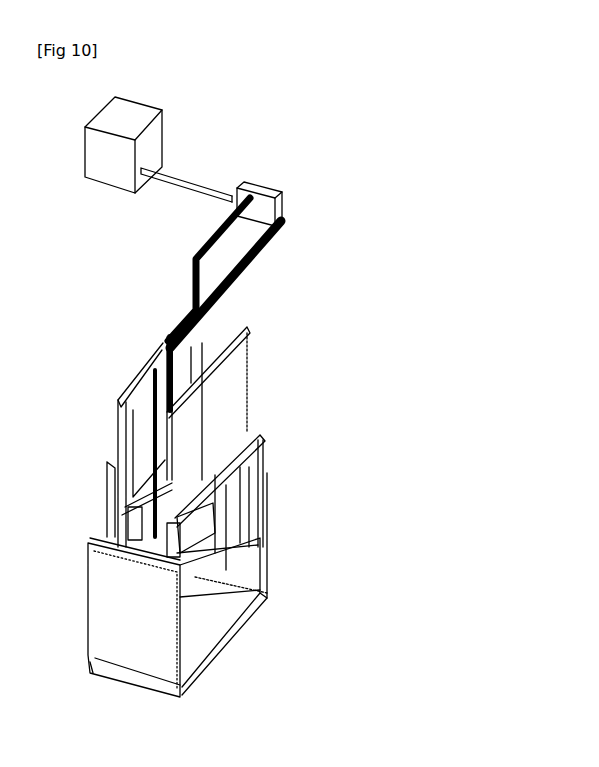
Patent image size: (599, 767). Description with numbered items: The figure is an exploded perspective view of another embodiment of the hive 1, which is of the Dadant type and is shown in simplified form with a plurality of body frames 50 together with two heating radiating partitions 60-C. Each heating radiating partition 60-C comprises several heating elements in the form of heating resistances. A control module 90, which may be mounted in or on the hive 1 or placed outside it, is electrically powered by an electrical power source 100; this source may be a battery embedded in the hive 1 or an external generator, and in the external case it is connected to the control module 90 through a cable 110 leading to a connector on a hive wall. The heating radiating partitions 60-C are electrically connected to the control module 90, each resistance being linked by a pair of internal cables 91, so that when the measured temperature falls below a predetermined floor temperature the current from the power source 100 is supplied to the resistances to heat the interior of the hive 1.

The electrical power source 100 is at (165, 122).
The cable 110 is at (206, 186).
The control module 90 is at (283, 199).
The internal cables 91 is at (206, 236).
The heating radiating partition 60-C is at (248, 354).
The body frames 50 is at (203, 580).
The hive 1 is at (338, 366).